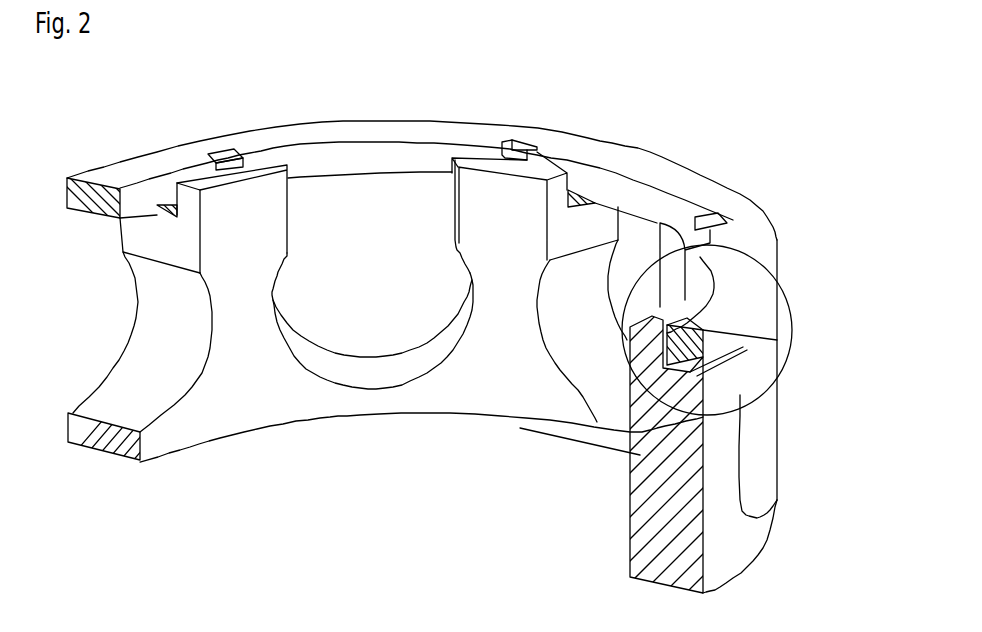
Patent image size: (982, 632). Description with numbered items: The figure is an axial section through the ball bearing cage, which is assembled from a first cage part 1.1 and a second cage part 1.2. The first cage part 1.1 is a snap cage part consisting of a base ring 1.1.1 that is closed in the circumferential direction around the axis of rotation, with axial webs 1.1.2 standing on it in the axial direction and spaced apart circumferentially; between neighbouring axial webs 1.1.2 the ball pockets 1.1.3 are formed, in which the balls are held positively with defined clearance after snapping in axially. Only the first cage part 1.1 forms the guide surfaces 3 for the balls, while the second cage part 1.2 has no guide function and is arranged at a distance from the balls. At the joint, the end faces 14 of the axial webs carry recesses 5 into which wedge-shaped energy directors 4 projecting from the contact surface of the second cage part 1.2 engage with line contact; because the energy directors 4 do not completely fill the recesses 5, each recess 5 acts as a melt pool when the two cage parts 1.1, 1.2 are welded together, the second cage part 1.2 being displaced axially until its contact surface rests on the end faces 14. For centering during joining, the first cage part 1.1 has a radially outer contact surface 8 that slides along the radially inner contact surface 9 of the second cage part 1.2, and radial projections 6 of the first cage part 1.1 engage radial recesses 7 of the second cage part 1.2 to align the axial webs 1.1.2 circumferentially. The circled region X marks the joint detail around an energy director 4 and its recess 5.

The first cage part 1.1 is at (381, 491).
The base ring 1.1.1 is at (317, 400).
The axial webs 1.1.2 is at (720, 487).
The ball pockets 1.1.3 is at (372, 370).
The second cage part 1.2 is at (107, 172).
The guide surfaces 3 is at (313, 360).
The energy directors 4 is at (660, 358).
The recesses 5 is at (630, 433).
The radial projections 6 is at (203, 172).
The radial recesses 7 is at (244, 160).
The radially outer contact surface 8 is at (575, 183).
The radially inner contact surface 9 is at (300, 200).
The end faces 14 is at (730, 337).
The detail region X is at (720, 330).